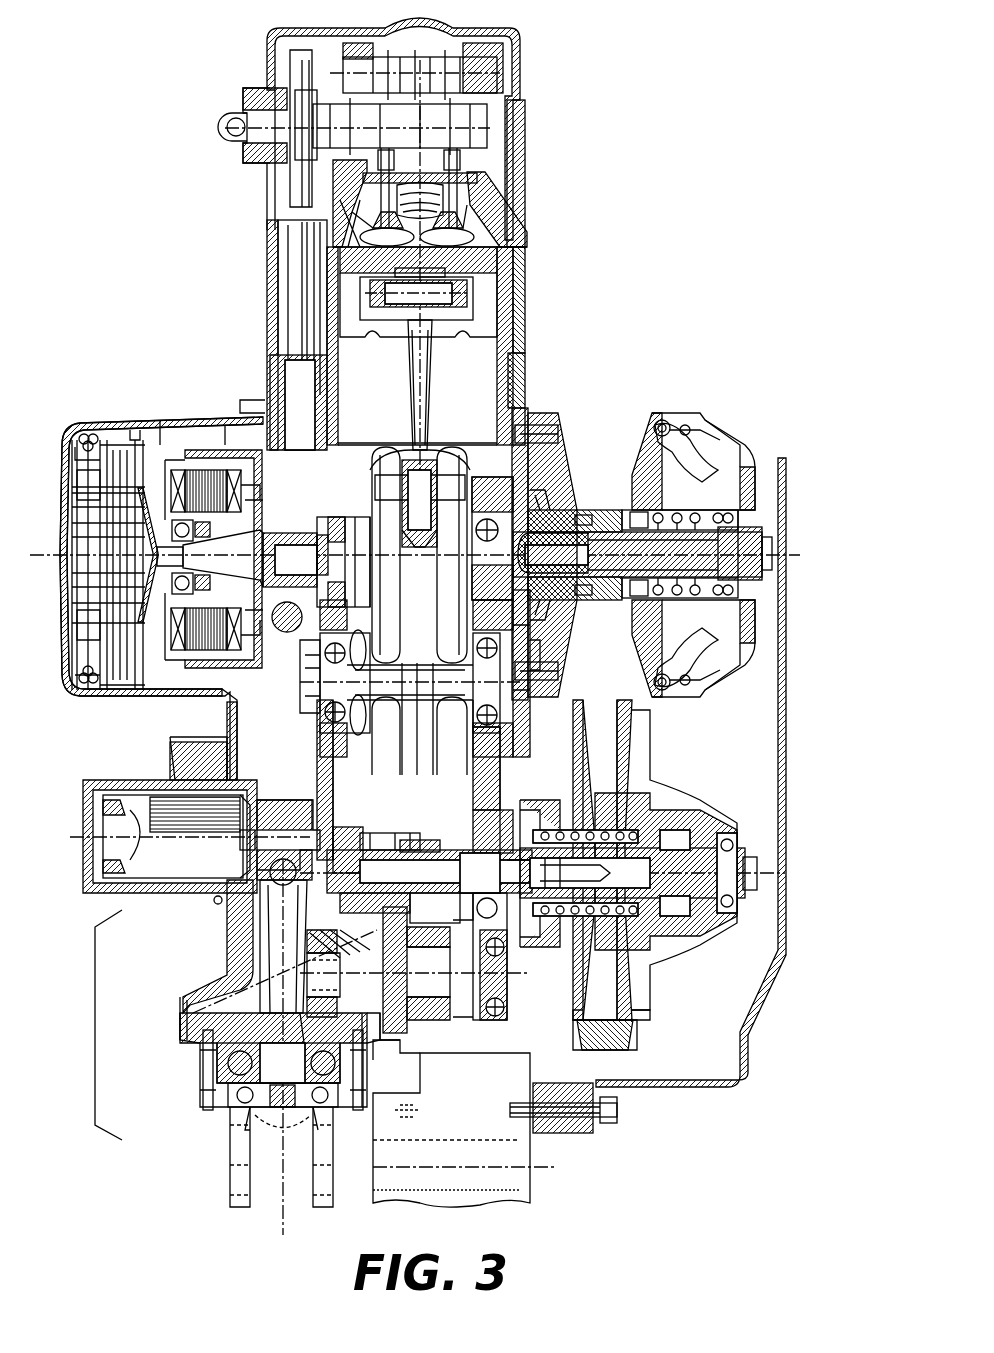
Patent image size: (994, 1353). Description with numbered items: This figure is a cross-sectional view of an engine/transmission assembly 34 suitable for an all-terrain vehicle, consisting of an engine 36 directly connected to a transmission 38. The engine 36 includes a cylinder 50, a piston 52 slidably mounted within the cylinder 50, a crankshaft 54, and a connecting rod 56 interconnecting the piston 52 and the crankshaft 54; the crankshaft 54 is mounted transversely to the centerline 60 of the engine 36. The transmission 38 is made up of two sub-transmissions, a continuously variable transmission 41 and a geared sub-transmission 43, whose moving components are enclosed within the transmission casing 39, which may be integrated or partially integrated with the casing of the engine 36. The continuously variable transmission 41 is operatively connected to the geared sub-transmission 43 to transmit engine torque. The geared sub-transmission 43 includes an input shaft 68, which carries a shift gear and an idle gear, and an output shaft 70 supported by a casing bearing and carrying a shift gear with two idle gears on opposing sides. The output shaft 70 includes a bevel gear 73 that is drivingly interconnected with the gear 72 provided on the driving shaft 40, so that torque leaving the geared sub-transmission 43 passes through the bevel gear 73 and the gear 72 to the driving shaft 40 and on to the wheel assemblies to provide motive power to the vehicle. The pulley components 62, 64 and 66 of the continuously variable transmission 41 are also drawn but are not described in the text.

The engine/transmission assembly 34 is at (725, 163).
The engine 36 is at (557, 113).
The transmission 38 is at (798, 403).
The transmission casing 39 is at (783, 737).
The driving shaft 40 is at (270, 947).
The continuously variable transmission 41 is at (737, 760).
The geared sub-transmission 43 is at (90, 1010).
The cylinder 50 is at (487, 333).
The piston 52 is at (457, 293).
The crankshaft 54 is at (290, 545).
The connecting rod 56 is at (423, 400).
The centerline of the engine 60 is at (417, 772).
The drive pulley 62 is at (603, 497).
The belt 64 is at (630, 1010).
The fan 66 is at (607, 497).
The input shaft 68 is at (435, 862).
The output shaft 70 is at (460, 1000).
The gear 72 is at (250, 1030).
The bevel gear 73 is at (362, 1070).